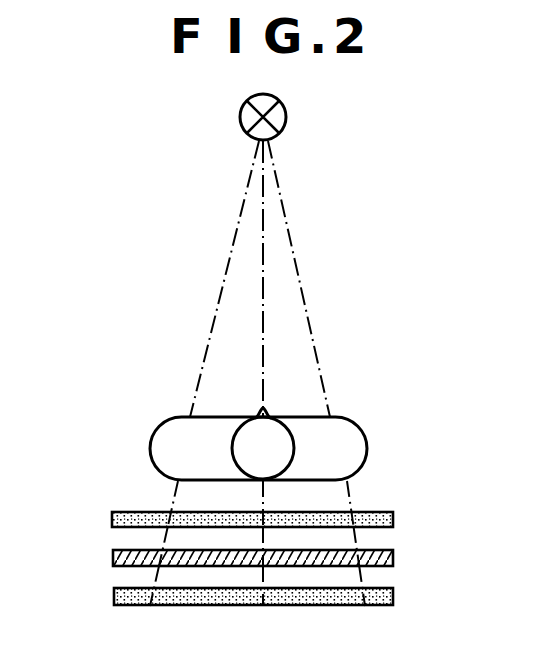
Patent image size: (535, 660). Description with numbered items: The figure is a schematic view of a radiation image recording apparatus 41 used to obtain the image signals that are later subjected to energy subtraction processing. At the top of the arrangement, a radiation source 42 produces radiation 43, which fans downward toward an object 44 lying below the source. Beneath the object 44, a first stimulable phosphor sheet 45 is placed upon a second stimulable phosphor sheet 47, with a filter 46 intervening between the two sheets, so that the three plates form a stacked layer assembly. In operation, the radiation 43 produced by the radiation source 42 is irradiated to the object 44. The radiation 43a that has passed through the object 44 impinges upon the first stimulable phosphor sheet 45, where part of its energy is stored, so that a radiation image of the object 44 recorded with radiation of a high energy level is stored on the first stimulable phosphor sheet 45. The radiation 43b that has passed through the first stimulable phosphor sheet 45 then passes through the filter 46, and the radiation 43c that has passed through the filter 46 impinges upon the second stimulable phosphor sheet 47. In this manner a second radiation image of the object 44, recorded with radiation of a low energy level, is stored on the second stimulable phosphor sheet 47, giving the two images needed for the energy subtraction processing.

The radiation image recording apparatus 41 is at (387, 283).
The radiation source 42 is at (287, 117).
The radiation 43 is at (238, 212).
The radiation having passed through the object 43a is at (263, 507).
The radiation having passed through the first stimulable phosphor sheet 43b is at (263, 542).
The radiation having passed through the filter 43c is at (263, 578).
The object 44 is at (340, 437).
The first stimulable phosphor sheet 45 is at (112, 519).
The filter 46 is at (113, 558).
The second stimulable phosphor sheet 47 is at (114, 597).